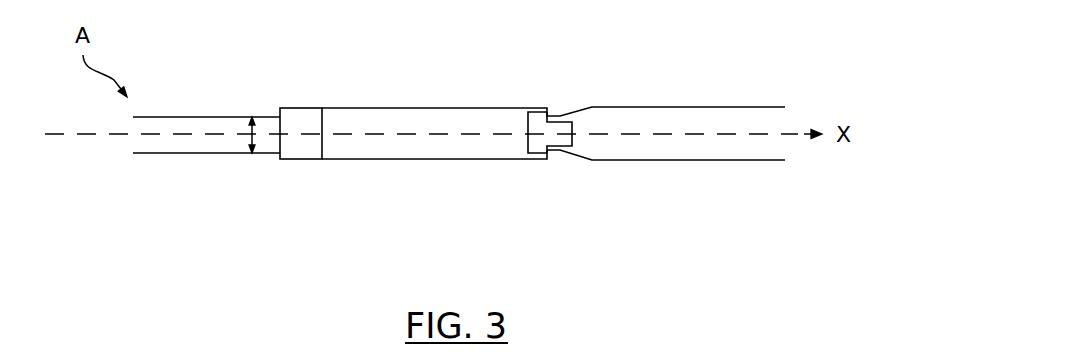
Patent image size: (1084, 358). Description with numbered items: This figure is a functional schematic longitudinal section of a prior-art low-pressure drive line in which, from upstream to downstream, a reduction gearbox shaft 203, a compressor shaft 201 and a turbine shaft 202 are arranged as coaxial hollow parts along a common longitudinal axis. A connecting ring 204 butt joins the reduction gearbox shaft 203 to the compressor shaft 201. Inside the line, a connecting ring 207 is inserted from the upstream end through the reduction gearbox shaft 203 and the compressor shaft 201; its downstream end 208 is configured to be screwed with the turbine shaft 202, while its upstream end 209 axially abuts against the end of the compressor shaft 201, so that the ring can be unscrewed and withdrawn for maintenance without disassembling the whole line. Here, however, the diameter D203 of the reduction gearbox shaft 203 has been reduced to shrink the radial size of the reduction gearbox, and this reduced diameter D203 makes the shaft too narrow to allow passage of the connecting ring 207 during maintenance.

The compressor shaft 201 is at (402, 159).
The turbine shaft 202 is at (703, 160).
The reduction gearbox shaft 203 is at (207, 153).
The connecting ring 204 is at (298, 160).
The connecting ring 207 is at (546, 187).
The downstream end 208 is at (572, 165).
The upstream end 209 is at (538, 155).
The diameter D203 is at (254, 121).